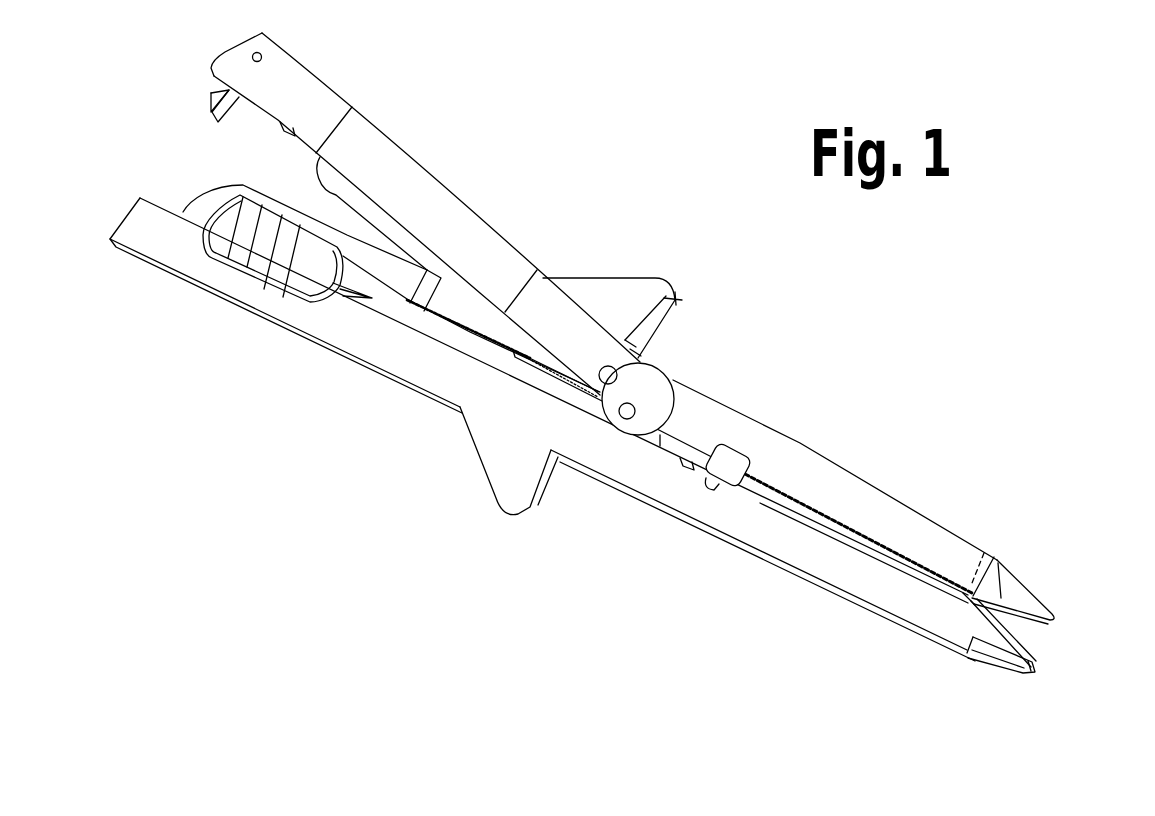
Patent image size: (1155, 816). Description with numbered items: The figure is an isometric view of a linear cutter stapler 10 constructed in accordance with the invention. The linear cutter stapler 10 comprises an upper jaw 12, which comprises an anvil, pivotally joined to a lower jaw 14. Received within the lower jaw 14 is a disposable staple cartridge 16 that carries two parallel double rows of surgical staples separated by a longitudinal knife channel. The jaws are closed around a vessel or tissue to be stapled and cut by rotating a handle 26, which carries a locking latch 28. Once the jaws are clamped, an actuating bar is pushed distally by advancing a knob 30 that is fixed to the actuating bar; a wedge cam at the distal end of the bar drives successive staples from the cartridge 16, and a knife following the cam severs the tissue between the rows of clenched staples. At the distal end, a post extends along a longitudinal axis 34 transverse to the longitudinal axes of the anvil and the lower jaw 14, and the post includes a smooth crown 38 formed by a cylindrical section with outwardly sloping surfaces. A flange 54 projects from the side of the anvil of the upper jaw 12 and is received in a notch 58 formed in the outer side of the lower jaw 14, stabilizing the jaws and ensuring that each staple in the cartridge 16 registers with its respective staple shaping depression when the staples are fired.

The linear cutter stapler 10 is at (213, 465).
The upper jaw 12 is at (890, 505).
The lower jaw 14 is at (797, 543).
The staple cartridge 16 is at (984, 653).
The handle 26 is at (446, 222).
The locking latch 28 is at (210, 112).
The knob 30 is at (260, 244).
The longitudinal axis 34 is at (997, 557).
The smooth crown 38 is at (1030, 641).
The flange 54 is at (730, 463).
The notch 58 is at (712, 476).